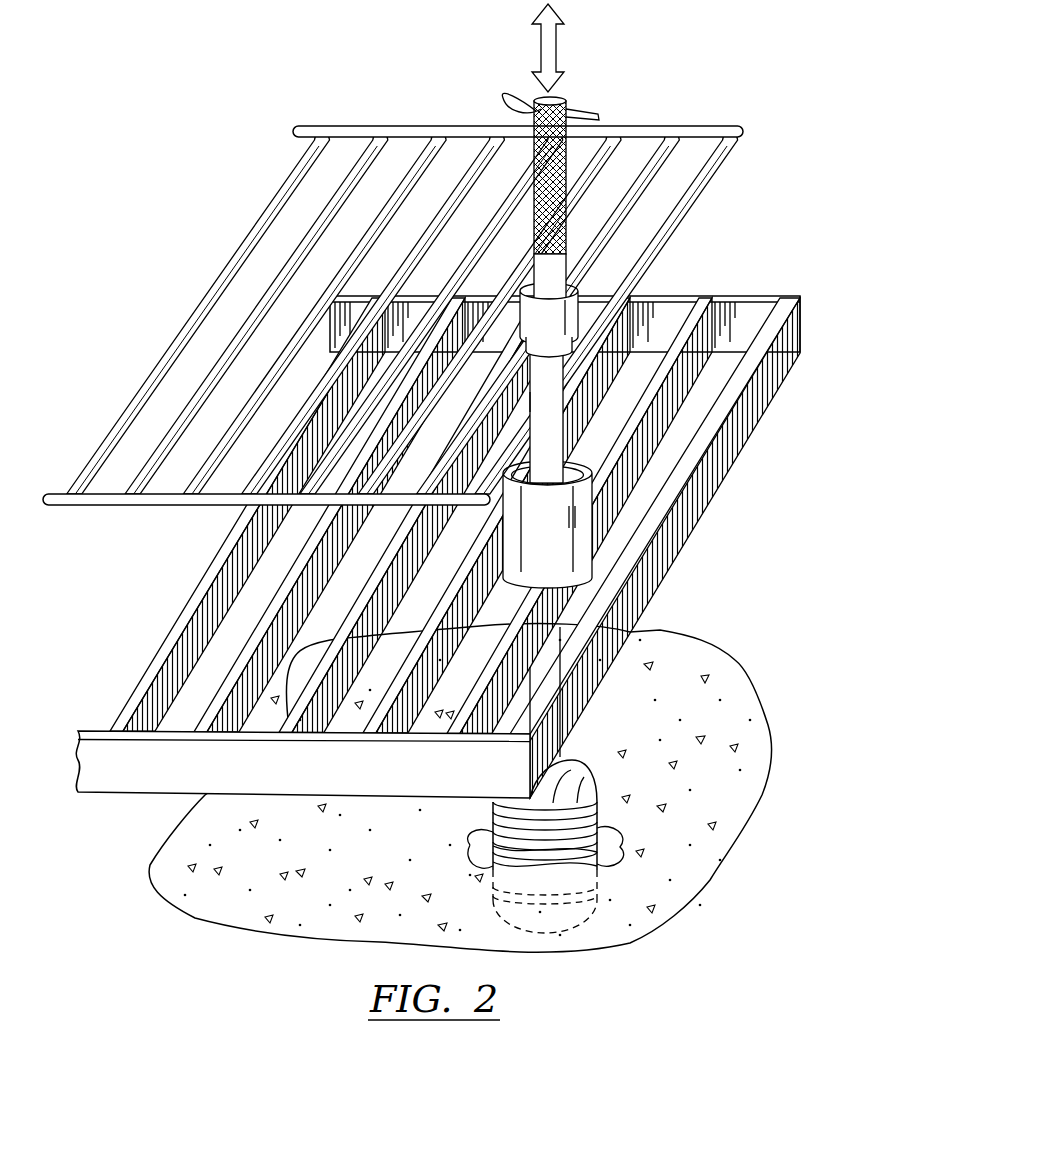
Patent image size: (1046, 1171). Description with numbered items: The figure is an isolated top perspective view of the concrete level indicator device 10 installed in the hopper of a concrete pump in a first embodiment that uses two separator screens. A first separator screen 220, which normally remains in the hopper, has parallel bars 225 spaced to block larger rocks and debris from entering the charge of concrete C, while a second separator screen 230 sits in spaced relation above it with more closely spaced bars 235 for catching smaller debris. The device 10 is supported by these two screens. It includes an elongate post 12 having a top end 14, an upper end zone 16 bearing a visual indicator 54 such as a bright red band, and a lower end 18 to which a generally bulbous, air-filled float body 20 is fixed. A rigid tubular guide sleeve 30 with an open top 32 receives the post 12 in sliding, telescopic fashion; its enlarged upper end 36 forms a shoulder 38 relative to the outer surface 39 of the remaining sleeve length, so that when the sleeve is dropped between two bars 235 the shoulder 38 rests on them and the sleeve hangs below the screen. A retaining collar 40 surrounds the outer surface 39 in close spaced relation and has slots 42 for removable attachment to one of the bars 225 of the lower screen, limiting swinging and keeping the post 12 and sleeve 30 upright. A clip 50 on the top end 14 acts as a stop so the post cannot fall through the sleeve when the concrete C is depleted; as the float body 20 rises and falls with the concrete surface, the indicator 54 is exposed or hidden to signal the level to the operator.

The concrete level indicator device 10 is at (580, 430).
The elongate post 12 is at (555, 430).
The top end 14 is at (552, 100).
The upper end zone 16 is at (555, 156).
The lower end 18 is at (568, 757).
The float body 20 is at (590, 790).
The tubular guide sleeve 30 is at (559, 455).
The open top 32 is at (551, 300).
The enlarged upper end 36 is at (579, 304).
The shoulder 38 is at (529, 346).
The outer surface 39 is at (533, 398).
The retaining collar 40 is at (575, 525).
The slots 42 is at (578, 552).
The clip 50 is at (505, 100).
The visual indicator 54 is at (553, 220).
The first separator screen 220 is at (486, 518).
The bars 225 is at (728, 448).
The second separator screen 230 is at (435, 290).
The bars 235 is at (688, 210).
The concrete C is at (706, 656).